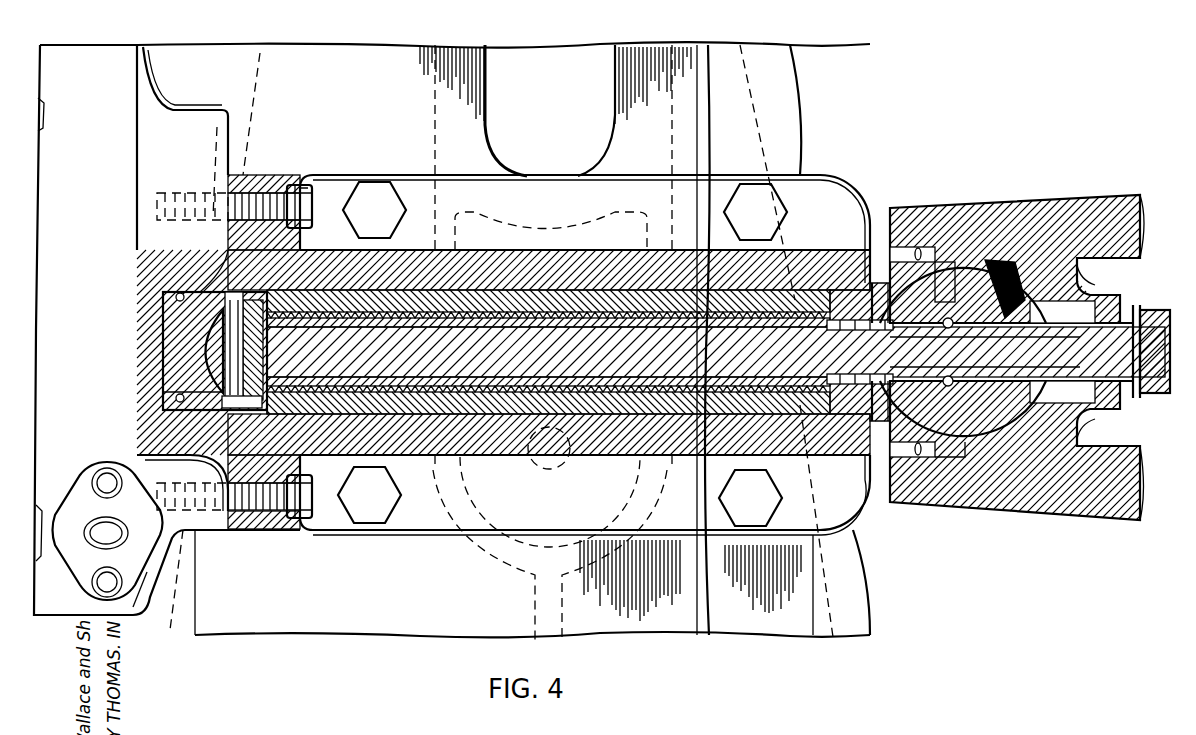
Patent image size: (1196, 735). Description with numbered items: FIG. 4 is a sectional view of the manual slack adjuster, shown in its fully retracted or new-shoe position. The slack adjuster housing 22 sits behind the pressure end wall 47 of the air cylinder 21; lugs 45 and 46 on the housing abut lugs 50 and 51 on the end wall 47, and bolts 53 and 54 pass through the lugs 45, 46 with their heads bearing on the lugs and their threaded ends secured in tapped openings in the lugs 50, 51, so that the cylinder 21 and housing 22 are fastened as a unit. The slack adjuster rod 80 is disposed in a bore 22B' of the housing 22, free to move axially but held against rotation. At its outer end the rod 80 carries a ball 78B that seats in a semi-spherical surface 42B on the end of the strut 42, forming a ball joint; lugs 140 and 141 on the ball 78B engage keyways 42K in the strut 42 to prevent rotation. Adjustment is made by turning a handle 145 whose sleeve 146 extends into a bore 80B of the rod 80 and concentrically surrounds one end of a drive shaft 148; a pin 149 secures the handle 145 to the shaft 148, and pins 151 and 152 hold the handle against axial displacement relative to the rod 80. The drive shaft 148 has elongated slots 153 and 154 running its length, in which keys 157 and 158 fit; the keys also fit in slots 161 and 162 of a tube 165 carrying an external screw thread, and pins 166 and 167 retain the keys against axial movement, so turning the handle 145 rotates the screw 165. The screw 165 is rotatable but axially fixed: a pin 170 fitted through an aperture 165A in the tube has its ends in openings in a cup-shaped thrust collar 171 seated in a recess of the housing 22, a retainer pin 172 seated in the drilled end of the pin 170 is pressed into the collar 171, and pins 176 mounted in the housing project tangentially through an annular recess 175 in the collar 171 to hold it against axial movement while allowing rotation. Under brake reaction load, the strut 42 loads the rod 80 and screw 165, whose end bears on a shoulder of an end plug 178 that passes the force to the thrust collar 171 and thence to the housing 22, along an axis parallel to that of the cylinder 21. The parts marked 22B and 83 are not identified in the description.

The cylinder 21 is at (84, 211).
The slack adjuster housing 22 is at (823, 171).
The hex bolt 22B is at (562, 328).
The bore 22B' is at (551, 230).
The strut 42 is at (1110, 195).
The semi-spherical surface 42B is at (1010, 300).
The keyways 42K is at (920, 245).
The lug 45 is at (255, 180).
The lug 46 is at (260, 518).
The end wall 47 is at (140, 238).
The lug 50 is at (205, 125).
The lug 51 is at (215, 520).
The bolt 53 is at (305, 200).
The bolt 54 is at (300, 505).
The ball element 78B is at (992, 262).
The slack adjuster rod 80 is at (887, 282).
The bore 80B is at (888, 422).
The mounting bracket 83 is at (92, 500).
The lug 140 is at (950, 265).
The lug 141 is at (952, 460).
The handle 145 is at (1100, 295).
The sleeve 146 is at (1082, 448).
The drive shaft 148 is at (1080, 355).
The pin 149 is at (1150, 393).
The pin 151 is at (948, 318).
The pin 152 is at (948, 386).
The elongated slot 153 is at (1095, 308).
The elongated slot 154 is at (1136, 398).
The key 157 is at (832, 318).
The key 158 is at (830, 480).
The slot 161 is at (872, 282).
The slot 162 is at (872, 422).
The tube 165 is at (205, 290).
The aperture 165A is at (298, 291).
The pin 166 is at (948, 340).
The pin 167 is at (897, 337).
The pin 170 is at (228, 250).
The thrust collar 171 is at (180, 290).
The retainer pin 172 is at (245, 408).
The annular recess 175 is at (180, 402).
The pins 176 is at (178, 295).
The end plug 178 is at (200, 345).